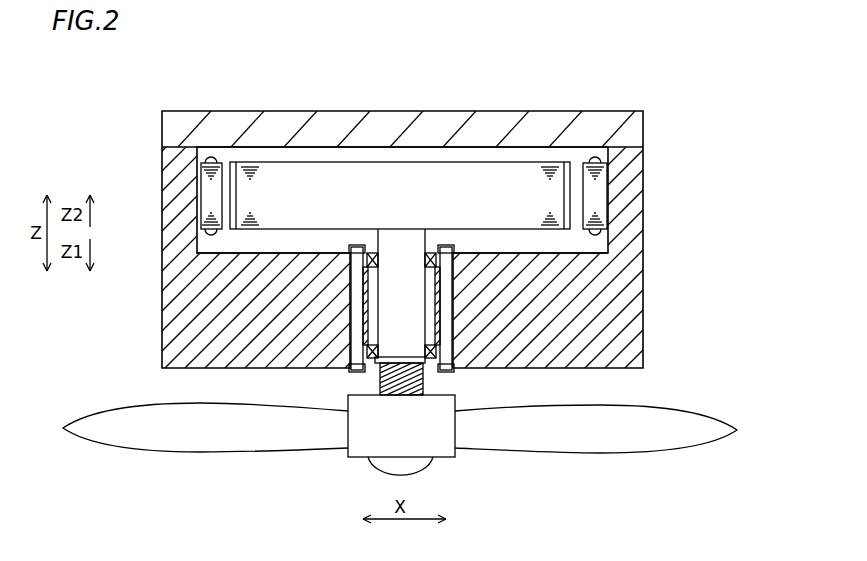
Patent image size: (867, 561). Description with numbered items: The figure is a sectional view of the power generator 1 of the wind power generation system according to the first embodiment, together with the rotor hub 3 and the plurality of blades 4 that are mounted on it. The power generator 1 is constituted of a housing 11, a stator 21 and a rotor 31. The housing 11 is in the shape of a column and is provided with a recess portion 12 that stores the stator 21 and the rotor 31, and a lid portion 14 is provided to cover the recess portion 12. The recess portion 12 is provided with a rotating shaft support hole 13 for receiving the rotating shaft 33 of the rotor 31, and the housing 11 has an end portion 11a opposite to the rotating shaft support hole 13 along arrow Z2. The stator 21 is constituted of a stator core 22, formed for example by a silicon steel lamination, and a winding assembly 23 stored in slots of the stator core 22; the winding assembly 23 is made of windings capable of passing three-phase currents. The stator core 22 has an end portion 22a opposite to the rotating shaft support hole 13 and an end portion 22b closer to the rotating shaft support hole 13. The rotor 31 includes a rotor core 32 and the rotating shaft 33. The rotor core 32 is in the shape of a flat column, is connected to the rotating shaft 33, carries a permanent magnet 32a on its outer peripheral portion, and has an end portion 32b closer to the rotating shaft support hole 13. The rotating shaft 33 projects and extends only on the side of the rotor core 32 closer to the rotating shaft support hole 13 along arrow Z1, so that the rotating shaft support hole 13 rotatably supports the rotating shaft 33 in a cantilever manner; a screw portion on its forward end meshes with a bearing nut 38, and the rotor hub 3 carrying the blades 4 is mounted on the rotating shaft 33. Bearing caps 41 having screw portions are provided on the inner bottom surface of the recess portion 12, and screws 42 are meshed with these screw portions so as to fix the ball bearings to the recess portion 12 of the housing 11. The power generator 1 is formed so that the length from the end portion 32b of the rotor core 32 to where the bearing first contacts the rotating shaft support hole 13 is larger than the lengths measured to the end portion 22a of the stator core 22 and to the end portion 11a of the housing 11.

The power generator 1 is at (637, 69).
The rotor hub 3 is at (362, 456).
The blades 4 is at (312, 443).
The housing 11 is at (636, 317).
The end portion of the housing 11a is at (178, 147).
The recess portion 12 is at (521, 253).
The rotating shaft support hole 13 is at (422, 366).
The lid portion 14 is at (331, 122).
The stator 21 is at (596, 187).
The stator core 22 is at (603, 198).
The end portion of the stator core 22a is at (220, 162).
The end portion of the stator core 22b is at (220, 232).
The winding assembly 23 is at (596, 237).
The rotor 31 is at (472, 178).
The rotor core 32 is at (524, 175).
The permanent magnet 32a is at (568, 167).
The end portion of the rotor core 32b is at (250, 231).
The rotating shaft 33 is at (403, 245).
The bearing nut 38 is at (428, 363).
The bearing caps 41 is at (366, 250).
The screws 42 is at (352, 300).